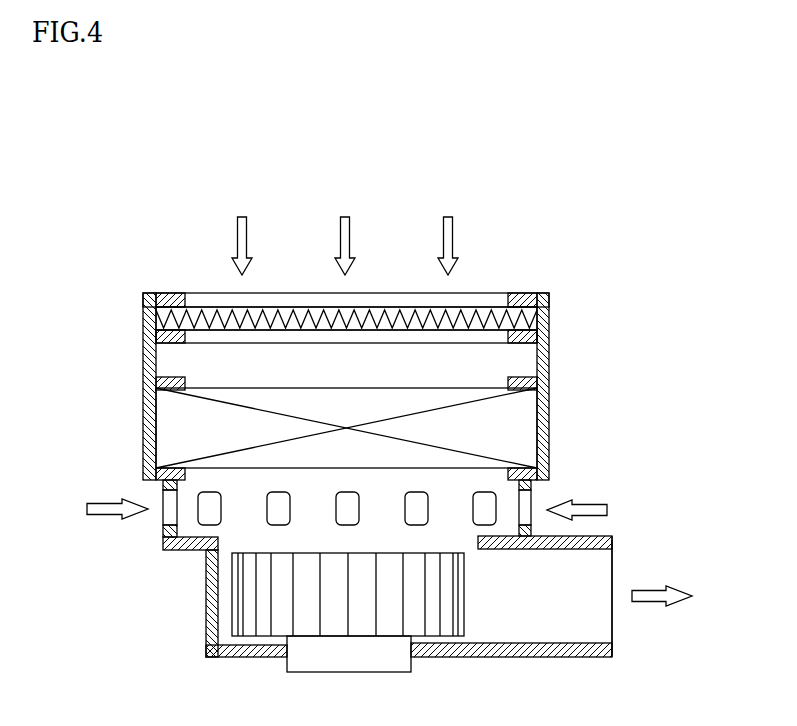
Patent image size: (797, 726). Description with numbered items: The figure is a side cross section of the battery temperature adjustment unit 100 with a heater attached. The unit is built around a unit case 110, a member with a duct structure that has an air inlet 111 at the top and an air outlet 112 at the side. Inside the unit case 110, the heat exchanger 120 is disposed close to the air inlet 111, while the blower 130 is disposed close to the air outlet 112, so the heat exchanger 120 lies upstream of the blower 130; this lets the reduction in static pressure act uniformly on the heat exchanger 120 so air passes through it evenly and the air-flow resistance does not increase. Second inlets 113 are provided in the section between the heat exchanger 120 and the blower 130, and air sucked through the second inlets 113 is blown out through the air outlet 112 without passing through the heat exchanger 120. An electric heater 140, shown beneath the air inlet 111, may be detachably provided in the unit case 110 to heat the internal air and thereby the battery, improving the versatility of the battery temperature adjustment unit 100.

The battery temperature adjustment unit 100 is at (143, 343).
The unit case 110 is at (550, 360).
The air inlet 111 is at (473, 295).
The air outlet 112 is at (617, 625).
The second inlet 113 is at (162, 502).
The heat exchanger 120 is at (365, 388).
The blower 130 is at (464, 603).
The electric heater 140 is at (207, 307).